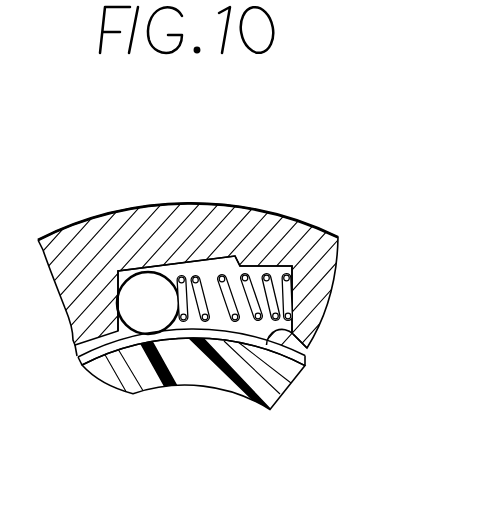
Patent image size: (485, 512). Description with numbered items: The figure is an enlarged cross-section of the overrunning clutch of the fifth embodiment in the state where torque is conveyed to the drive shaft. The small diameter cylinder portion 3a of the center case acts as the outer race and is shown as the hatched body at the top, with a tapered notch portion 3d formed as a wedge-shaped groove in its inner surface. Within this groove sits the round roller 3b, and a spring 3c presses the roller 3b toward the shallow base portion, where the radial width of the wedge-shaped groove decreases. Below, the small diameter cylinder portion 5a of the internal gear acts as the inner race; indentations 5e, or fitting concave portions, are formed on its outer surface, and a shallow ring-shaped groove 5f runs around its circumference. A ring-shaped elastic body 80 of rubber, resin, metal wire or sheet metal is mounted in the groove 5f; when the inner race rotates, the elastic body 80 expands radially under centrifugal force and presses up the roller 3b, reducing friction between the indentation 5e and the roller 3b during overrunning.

The small diameter cylinder portion 3a is at (232, 227).
The roller 3b is at (140, 290).
The spring 3c is at (248, 280).
The tapered notch portion 3d is at (201, 264).
The small diameter cylinder portion 5a is at (272, 386).
The indentation 5e is at (300, 336).
The ring-shaped groove 5f is at (93, 357).
The elastic body 80 is at (193, 340).